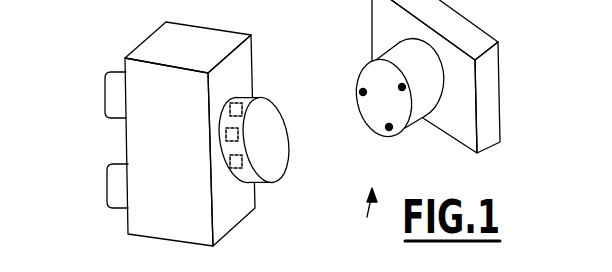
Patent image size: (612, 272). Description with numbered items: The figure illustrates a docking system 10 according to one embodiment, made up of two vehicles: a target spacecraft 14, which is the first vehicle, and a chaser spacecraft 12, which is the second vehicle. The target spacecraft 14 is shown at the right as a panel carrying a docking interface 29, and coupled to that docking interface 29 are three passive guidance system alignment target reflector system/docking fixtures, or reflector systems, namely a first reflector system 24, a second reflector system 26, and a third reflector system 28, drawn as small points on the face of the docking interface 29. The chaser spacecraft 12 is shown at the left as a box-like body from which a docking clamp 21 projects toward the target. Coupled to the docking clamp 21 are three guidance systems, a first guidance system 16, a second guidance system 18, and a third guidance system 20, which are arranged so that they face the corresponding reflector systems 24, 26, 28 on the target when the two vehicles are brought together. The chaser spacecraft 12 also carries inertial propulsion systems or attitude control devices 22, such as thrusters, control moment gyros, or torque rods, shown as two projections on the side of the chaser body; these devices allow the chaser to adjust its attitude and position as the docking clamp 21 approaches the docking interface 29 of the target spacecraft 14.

The docking system 10 is at (366, 220).
The chaser spacecraft 12 is at (176, 228).
The target spacecraft 14 is at (500, 142).
The first guidance system 16 is at (259, 113).
The second guidance system 18 is at (222, 149).
The third guidance system 20 is at (248, 167).
The docking clamp 21 is at (285, 123).
The attitude control devices 22 is at (103, 85).
The first reflector system 24 is at (389, 131).
The second reflector system 26 is at (360, 90).
The third reflector system 28 is at (400, 88).
The docking interface 29 is at (387, 87).